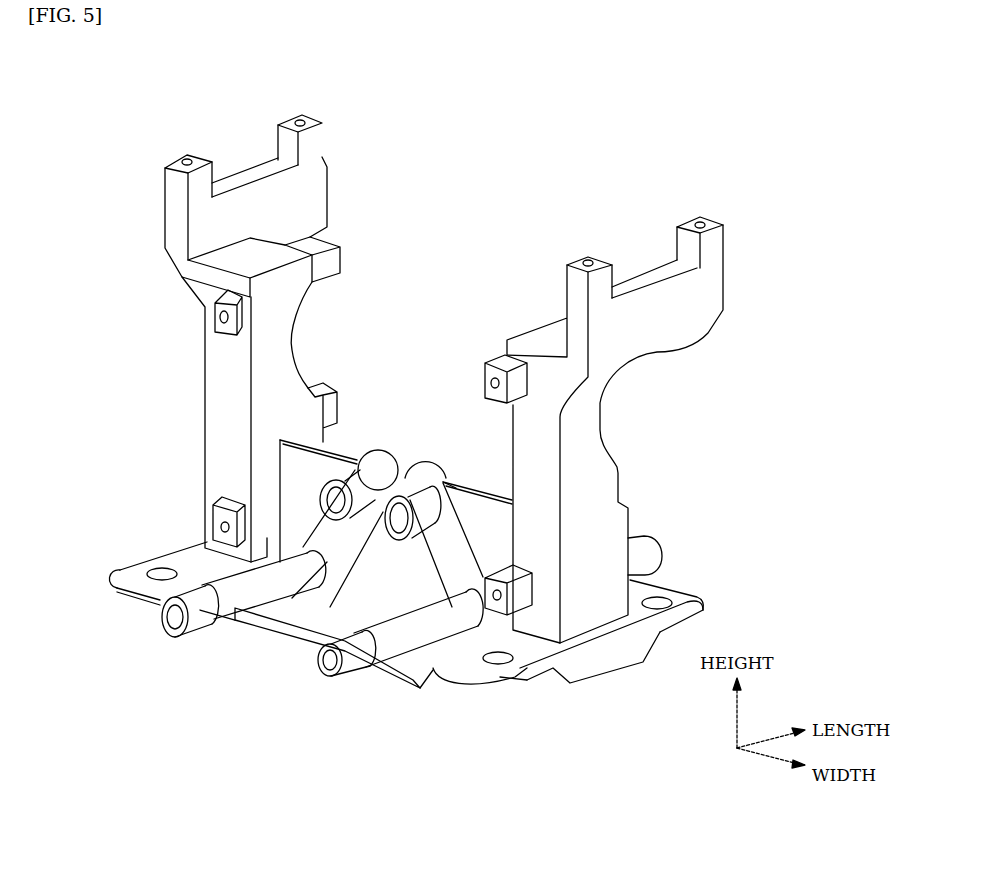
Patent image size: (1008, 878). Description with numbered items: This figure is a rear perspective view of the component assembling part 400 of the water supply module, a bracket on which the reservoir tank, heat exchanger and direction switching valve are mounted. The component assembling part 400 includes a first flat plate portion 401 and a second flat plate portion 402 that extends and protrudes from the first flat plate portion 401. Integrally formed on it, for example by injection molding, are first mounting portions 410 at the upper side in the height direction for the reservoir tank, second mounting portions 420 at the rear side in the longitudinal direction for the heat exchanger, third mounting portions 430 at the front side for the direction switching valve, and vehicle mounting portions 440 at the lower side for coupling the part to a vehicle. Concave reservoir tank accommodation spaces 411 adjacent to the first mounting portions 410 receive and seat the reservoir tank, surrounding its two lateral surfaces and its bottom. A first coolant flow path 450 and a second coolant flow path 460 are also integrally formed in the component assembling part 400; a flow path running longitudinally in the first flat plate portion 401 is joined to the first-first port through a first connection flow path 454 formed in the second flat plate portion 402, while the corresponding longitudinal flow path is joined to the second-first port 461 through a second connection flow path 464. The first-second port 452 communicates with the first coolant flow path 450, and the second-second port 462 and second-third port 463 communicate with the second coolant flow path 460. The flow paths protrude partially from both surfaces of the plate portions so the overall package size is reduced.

The component assembling part 400 is at (125, 590).
The first flat plate portion 401 is at (512, 645).
The second flat plate portion 402 is at (482, 508).
The first mounting portion 410 is at (290, 118).
The reservoir tank accommodation space 411 is at (238, 262).
The second mounting portion 420 is at (212, 307).
The third mounting portion 430 is at (345, 250).
The vehicle mounting portion 440 is at (612, 647).
The first coolant flow path 450 is at (353, 462).
The first-second port 452 is at (168, 628).
The first connection flow path 454 is at (295, 500).
The second coolant flow path 460 is at (438, 622).
The second-first port 461 is at (435, 460).
The second-second port 462 is at (320, 672).
The second-third port 463 is at (658, 540).
The second connection flow path 464 is at (468, 523).